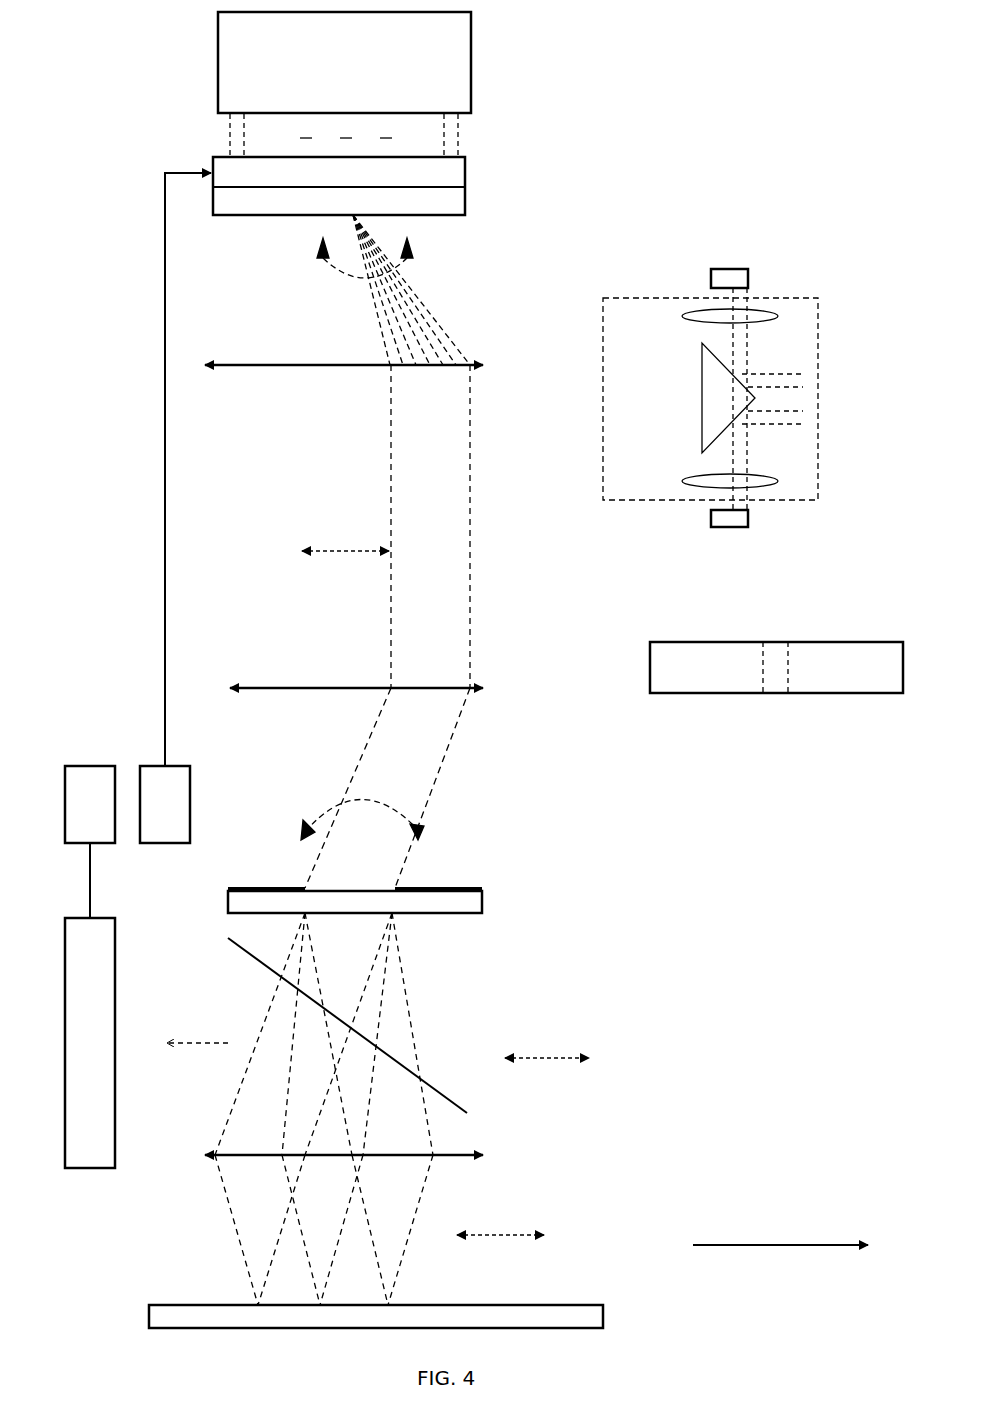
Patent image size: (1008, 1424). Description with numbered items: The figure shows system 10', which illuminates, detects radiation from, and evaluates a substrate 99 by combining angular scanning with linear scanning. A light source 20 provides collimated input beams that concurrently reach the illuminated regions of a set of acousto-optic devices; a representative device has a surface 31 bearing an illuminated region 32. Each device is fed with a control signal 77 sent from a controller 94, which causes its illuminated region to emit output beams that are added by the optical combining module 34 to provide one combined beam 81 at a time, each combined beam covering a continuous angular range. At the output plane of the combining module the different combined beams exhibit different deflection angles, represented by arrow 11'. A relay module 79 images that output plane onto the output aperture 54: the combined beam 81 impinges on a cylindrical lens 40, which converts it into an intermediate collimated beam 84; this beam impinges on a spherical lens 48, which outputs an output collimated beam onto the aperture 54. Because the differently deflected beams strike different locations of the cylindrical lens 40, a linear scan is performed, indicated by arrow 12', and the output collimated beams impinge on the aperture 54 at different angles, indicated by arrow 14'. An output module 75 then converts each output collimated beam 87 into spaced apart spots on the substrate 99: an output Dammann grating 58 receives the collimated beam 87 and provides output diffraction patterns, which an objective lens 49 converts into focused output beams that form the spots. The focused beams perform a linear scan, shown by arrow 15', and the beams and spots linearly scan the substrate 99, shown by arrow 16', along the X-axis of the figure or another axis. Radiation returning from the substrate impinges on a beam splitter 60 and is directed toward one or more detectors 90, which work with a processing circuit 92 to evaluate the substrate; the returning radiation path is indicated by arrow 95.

The relay module 79 is at (145, 168).
The light source 20 is at (354, 72).
The optical combining module 34 is at (349, 213).
The control signal 77 is at (163, 360).
The combined beam 81 is at (360, 314).
The arrow representing angular scan 11' is at (354, 258).
The cylindrical lens 40 is at (484, 363).
The intermediate collimated beam 84 is at (447, 473).
The arrow representing linear scan 12' is at (325, 544).
The spherical lens 48 is at (486, 688).
The output collimated beam 87 is at (408, 775).
The arrow representing angular scan 14' is at (362, 804).
The output aperture 54 is at (340, 887).
The output Dammann grating 58 is at (355, 902).
The beam splitter 60 is at (247, 952).
The output module 75 is at (557, 1032).
The reflected light 95 is at (197, 1031).
The arrow representing linear scan 15' is at (568, 1052).
The objective lens 49 is at (483, 1153).
The arrow representing linear scan 16' is at (523, 1230).
The x-axis X-axis is at (768, 1243).
The processing circuit 92 is at (100, 815).
The controller 94 is at (175, 815).
The detector 90 is at (100, 1053).
The substrate 99 is at (387, 1325).
The system 10' is at (632, 1304).
The surface 31 is at (705, 641).
The illuminated region 32 is at (785, 676).